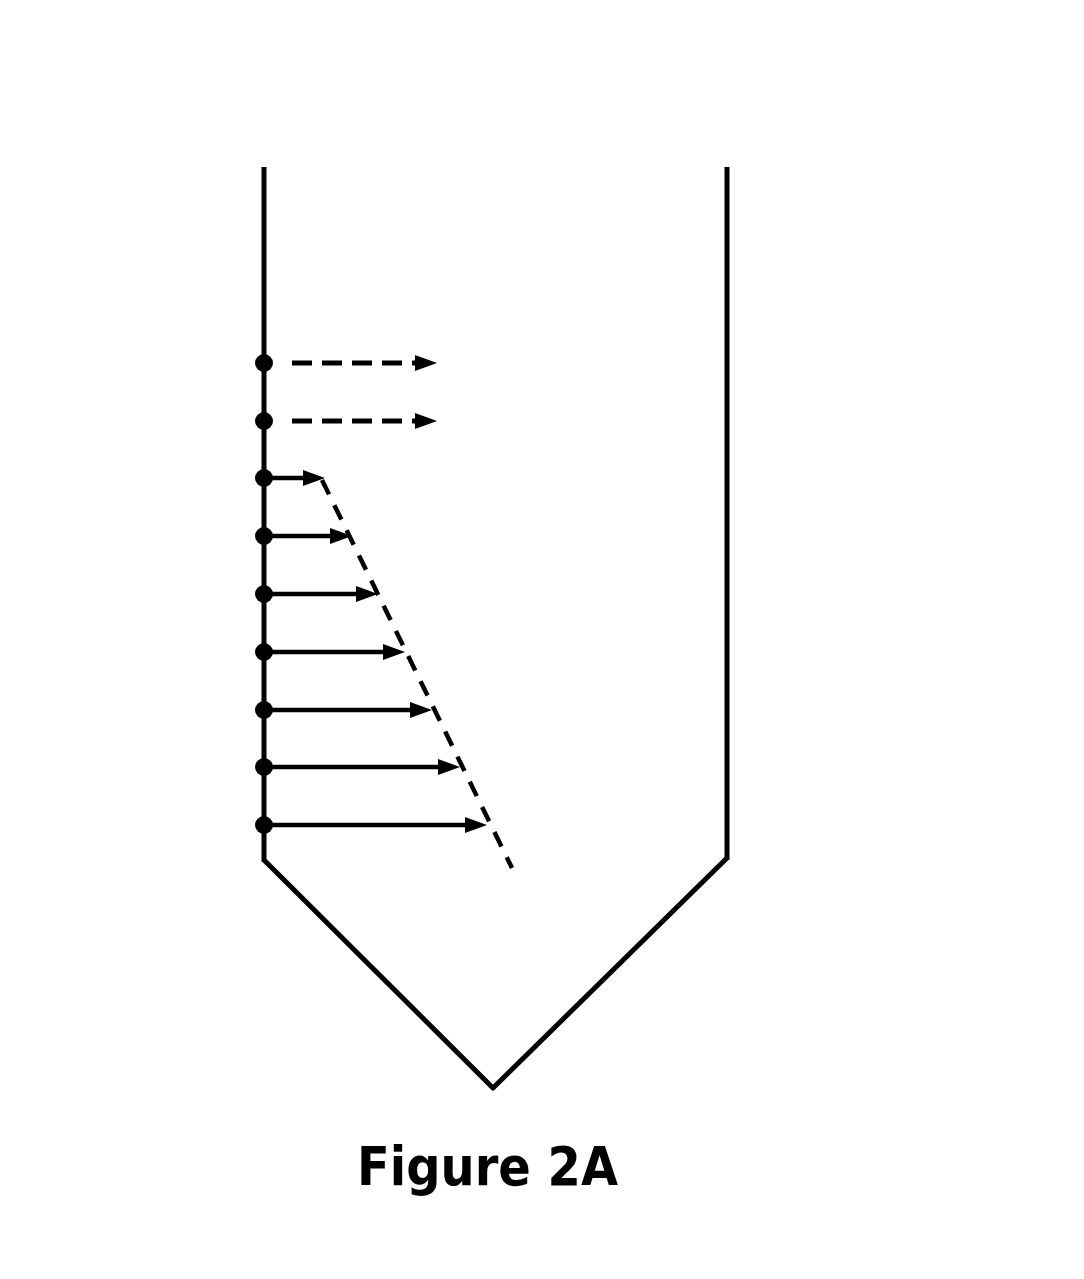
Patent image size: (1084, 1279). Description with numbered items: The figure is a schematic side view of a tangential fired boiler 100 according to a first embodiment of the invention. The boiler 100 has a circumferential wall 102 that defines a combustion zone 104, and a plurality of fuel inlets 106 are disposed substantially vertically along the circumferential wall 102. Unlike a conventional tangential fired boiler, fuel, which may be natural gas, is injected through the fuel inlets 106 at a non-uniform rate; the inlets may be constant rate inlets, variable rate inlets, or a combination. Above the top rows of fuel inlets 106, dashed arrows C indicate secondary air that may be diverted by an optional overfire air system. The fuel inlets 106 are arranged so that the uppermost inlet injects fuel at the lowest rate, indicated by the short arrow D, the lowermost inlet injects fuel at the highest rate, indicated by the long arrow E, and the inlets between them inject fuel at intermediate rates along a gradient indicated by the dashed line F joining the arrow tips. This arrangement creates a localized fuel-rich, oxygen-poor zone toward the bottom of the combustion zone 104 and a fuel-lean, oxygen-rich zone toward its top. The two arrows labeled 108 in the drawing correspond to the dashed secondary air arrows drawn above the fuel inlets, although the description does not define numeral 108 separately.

The tangential fired boiler 100 is at (556, 118).
The circumferential wall 102 is at (263, 243).
The combustion zone 104 is at (640, 447).
The fuel inlets 106 is at (262, 653).
The dashed flow arrows 108 is at (262, 363).
The dashed arrows indicating secondary air C is at (445, 420).
The arrow indicating lowest fuel injection rate D is at (285, 478).
The arrow indicating highest fuel injection rate E is at (345, 828).
The dashed line indicating fuel rate gradient F is at (503, 836).